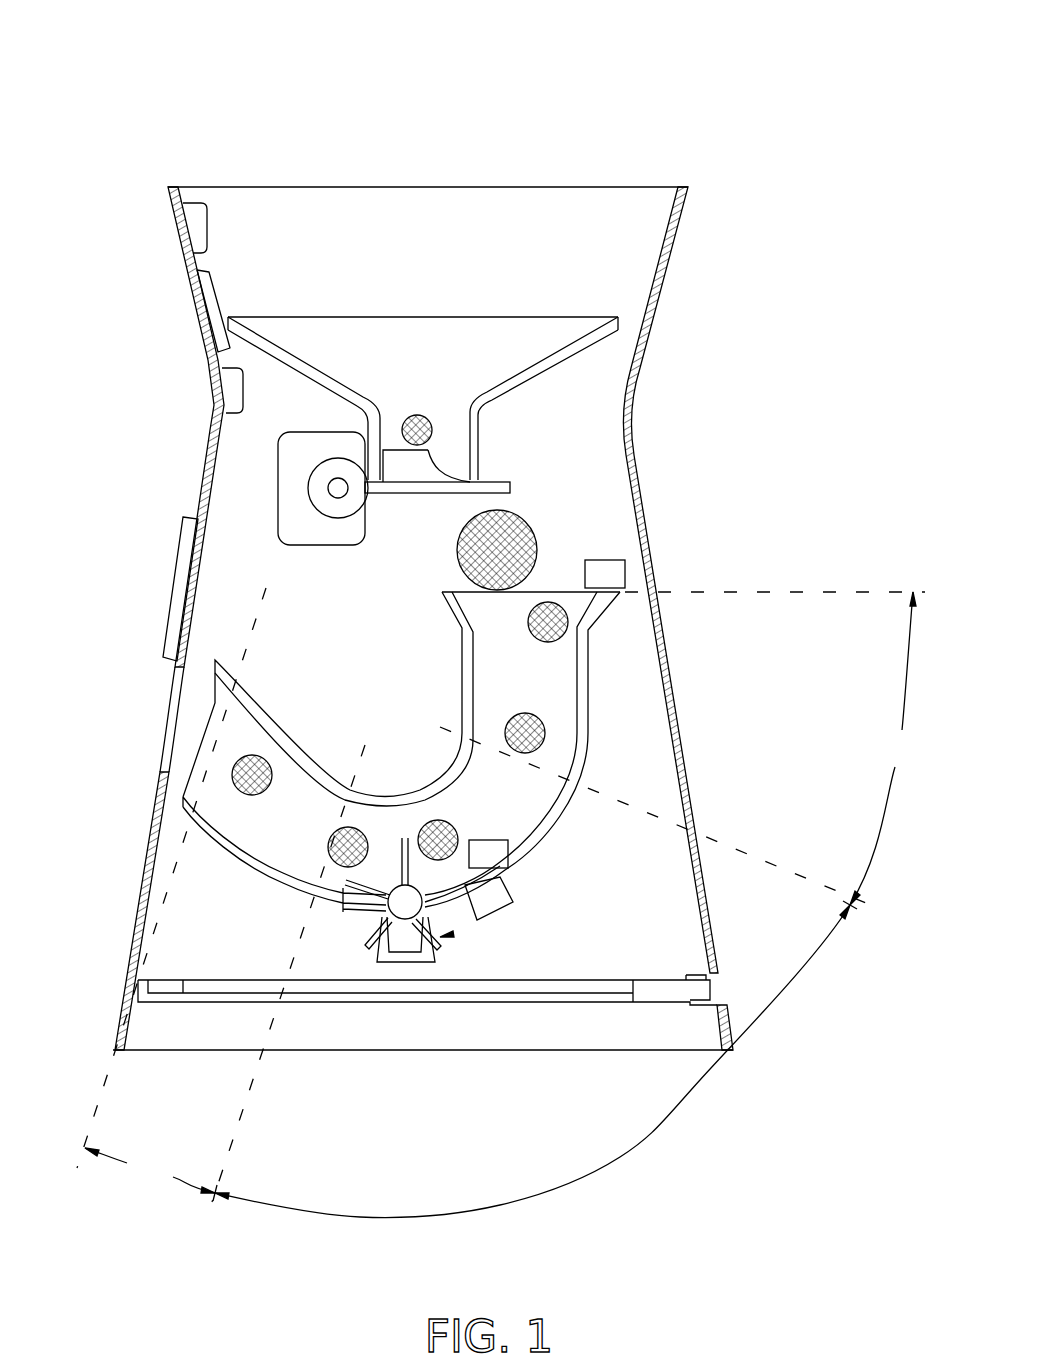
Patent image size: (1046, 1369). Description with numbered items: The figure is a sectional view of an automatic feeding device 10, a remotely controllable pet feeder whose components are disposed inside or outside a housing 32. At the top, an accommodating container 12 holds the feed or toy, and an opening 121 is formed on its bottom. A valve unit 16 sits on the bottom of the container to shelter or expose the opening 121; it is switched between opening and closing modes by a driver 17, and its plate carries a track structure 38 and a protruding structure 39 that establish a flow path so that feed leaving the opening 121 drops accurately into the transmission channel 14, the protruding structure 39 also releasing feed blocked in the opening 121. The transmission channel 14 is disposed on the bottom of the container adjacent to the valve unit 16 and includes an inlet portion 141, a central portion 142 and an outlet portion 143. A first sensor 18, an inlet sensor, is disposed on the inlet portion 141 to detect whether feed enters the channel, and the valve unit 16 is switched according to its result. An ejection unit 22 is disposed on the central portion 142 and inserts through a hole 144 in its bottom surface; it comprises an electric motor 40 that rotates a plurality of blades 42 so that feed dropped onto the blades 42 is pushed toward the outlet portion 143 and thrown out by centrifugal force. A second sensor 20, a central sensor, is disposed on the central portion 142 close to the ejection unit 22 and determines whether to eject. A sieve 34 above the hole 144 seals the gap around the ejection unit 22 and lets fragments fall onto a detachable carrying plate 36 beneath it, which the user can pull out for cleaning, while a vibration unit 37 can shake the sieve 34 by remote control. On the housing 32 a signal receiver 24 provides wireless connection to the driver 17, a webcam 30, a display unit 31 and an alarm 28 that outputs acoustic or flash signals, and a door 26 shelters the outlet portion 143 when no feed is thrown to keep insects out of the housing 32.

The automatic feeding device 10 is at (812, 57).
The accommodating container 12 is at (562, 326).
The opening 121 is at (462, 465).
The transmission channel 14 is at (582, 695).
The inlet portion 141 is at (682, 750).
The central portion 142 is at (531, 1061).
The outlet portion 143 is at (221, 895).
The hole 144 is at (348, 892).
The valve unit 16 is at (500, 488).
The driver 17 is at (312, 492).
The first sensor 18 is at (614, 573).
The second sensor 20 is at (497, 853).
The ejection unit 22 is at (433, 900).
The signal receiver 24 is at (292, 452).
The door 26 is at (183, 543).
The alarm 28 is at (193, 230).
The webcam 30 is at (232, 388).
The display unit 31 is at (212, 312).
The housing 32 is at (680, 221).
The sieve 34 is at (452, 937).
The carrying plate 36 is at (597, 983).
The vibration unit 37 is at (487, 898).
The track structure 38 is at (442, 477).
The protruding structure 39 is at (398, 467).
The electric motor 40 is at (403, 905).
The blades 42 is at (360, 888).